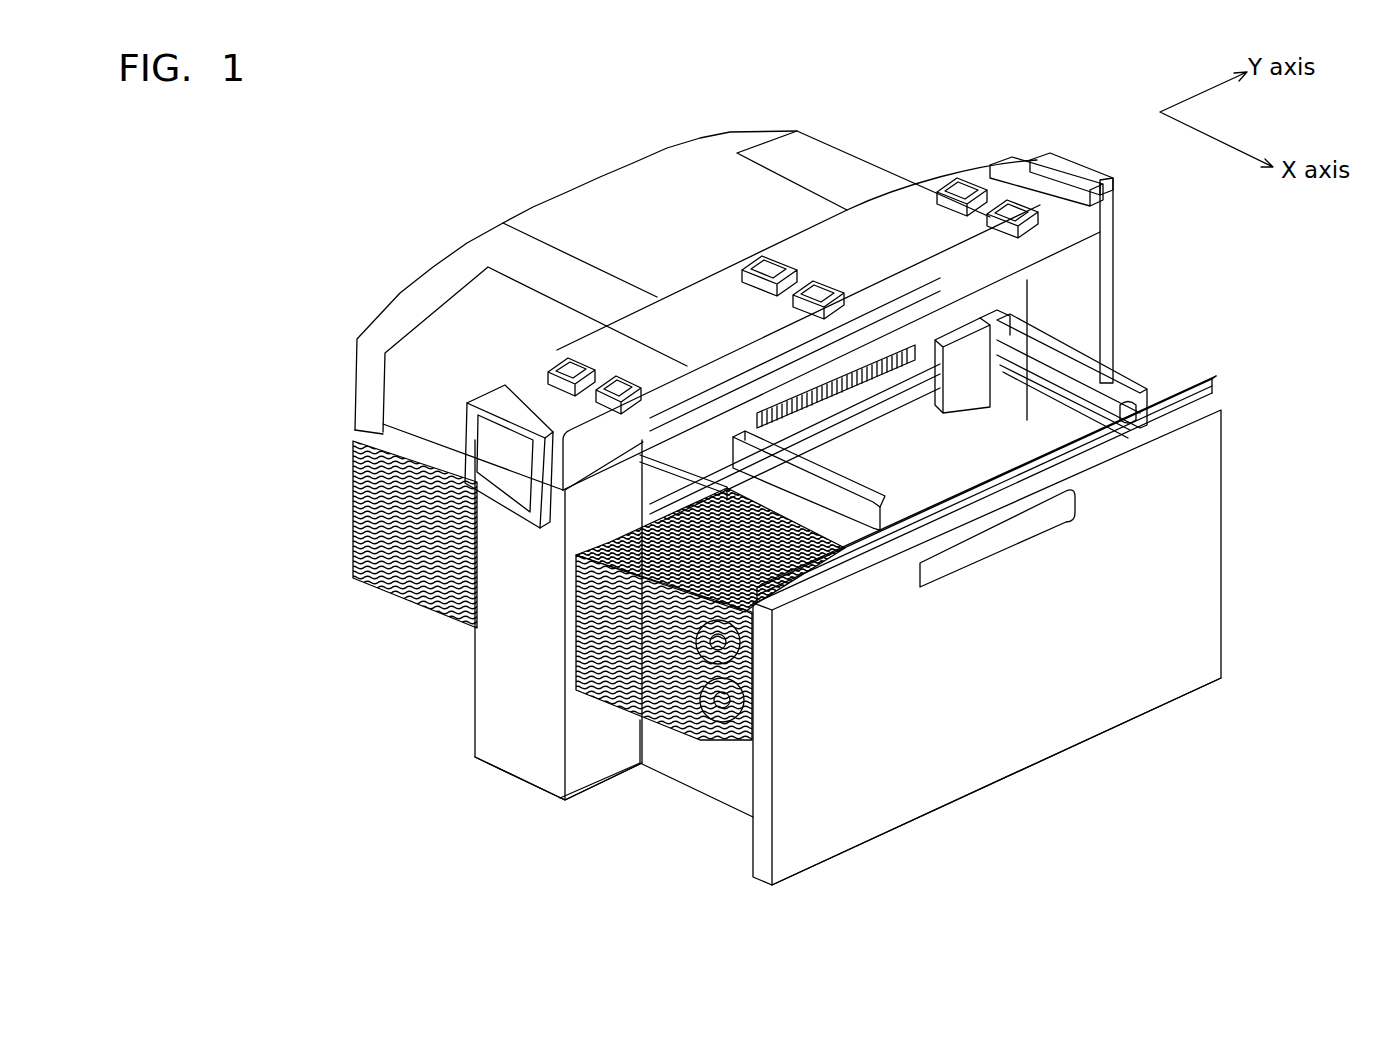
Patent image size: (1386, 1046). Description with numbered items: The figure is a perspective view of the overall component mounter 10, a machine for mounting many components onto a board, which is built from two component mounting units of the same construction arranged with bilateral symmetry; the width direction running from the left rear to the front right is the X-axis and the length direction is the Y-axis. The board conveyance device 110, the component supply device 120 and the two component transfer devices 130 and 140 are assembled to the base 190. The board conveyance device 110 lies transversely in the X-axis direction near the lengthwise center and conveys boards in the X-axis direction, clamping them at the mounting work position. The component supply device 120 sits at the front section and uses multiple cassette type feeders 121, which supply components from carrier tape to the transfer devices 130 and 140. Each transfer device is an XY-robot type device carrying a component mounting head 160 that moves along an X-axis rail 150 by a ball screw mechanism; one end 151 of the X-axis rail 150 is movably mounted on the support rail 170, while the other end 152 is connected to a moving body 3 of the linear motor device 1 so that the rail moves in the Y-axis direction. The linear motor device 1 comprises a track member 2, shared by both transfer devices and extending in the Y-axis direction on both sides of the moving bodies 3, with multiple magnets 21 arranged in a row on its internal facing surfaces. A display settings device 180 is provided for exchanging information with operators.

The component mounter 10 is at (383, 157).
The linear motor device 1 is at (936, 116).
The track member 2 is at (865, 370).
The moving body 3 is at (958, 331).
The magnet 21 is at (845, 370).
The board conveyance device 110 is at (997, 540).
The component supply device 120 is at (675, 749).
The feeder 121 is at (727, 735).
The component transfer device 130 is at (1143, 362).
The component transfer device 140 is at (873, 560).
The X-axis rail 150 is at (1092, 378).
The end of X-axis rail 151 is at (1140, 380).
The other end of X-axis rail 152 is at (1108, 243).
The component mounting head 160 is at (1098, 325).
The support rail 170 is at (1215, 395).
The display settings device 180 is at (508, 477).
The base 190 is at (1195, 574).